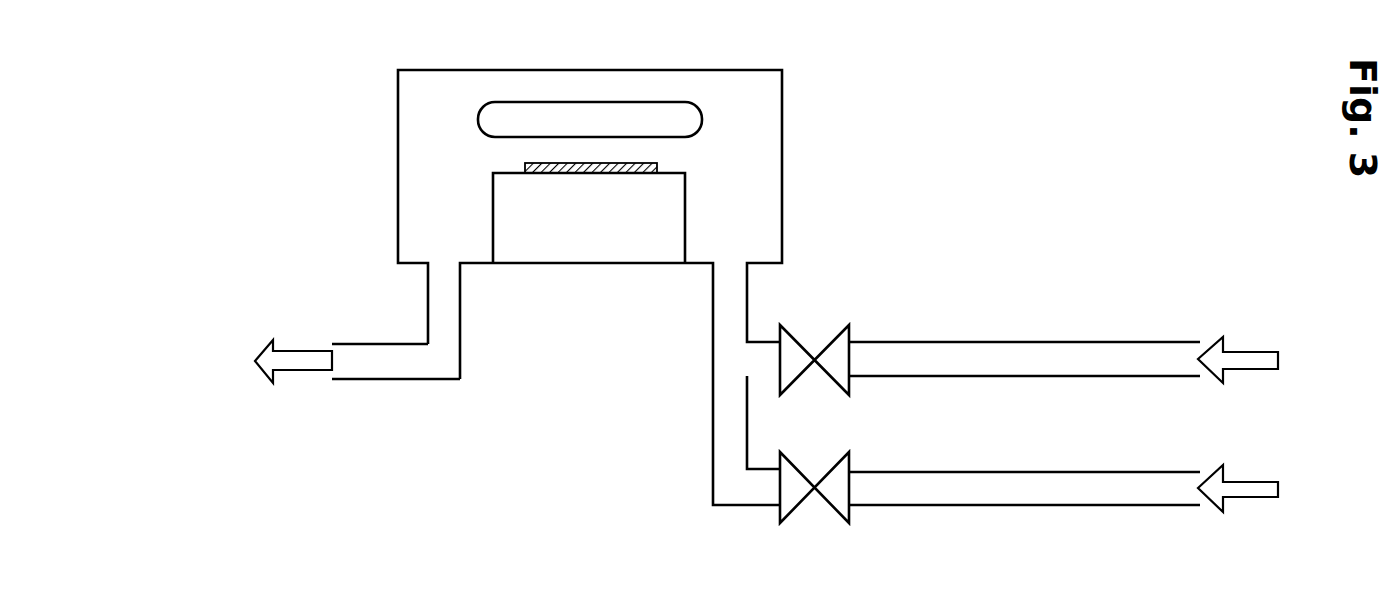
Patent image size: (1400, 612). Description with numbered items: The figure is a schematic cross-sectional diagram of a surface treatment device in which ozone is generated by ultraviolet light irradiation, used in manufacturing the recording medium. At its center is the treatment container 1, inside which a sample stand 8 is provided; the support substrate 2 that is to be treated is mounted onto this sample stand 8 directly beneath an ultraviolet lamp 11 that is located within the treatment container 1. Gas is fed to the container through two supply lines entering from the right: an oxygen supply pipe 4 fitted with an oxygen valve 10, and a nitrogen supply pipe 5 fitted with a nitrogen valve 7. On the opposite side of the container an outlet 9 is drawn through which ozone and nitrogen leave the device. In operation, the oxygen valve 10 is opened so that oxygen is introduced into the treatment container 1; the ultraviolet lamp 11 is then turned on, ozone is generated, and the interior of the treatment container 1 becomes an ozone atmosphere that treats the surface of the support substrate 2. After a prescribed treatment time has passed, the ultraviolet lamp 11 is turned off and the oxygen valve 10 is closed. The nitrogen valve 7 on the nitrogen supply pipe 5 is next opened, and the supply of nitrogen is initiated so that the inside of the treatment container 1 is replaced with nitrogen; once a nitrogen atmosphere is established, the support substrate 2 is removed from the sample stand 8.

The treatment container 1 is at (578, 70).
The support substrate 2 is at (640, 163).
The oxygen supply pipe 4 is at (1148, 342).
The nitrogen supply pipe 5 is at (1170, 505).
The nitrogen valve 7 is at (828, 505).
The sample stand 8 is at (604, 247).
The ozone/nitrogen outlet pipe 9 is at (378, 380).
The oxygen valve 10 is at (790, 330).
The ultraviolet lamp 11 is at (703, 117).